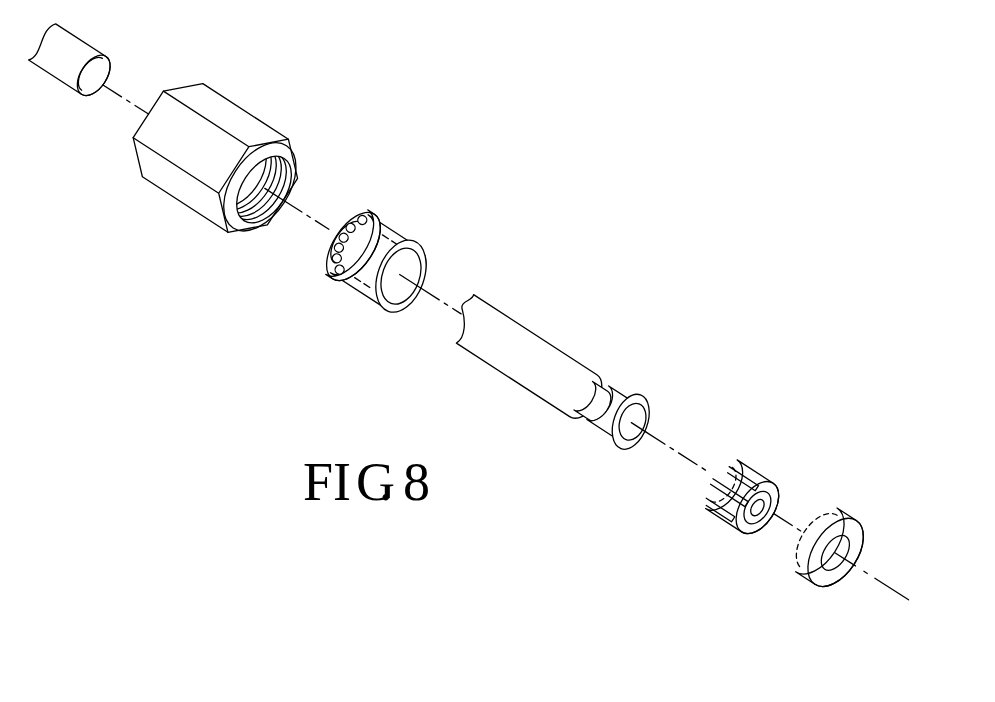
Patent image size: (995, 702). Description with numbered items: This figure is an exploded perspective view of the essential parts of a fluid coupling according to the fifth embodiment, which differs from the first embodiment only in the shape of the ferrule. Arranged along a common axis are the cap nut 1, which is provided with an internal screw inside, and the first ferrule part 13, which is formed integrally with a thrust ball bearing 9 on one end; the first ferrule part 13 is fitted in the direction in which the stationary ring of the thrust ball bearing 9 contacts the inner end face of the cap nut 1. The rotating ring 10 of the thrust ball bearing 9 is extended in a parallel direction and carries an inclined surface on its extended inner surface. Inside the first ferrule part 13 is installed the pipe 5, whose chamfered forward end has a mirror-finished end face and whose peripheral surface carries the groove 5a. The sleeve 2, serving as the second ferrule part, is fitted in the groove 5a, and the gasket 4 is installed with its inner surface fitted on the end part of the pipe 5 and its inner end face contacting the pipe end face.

The cap nut 1 is at (238, 106).
The sleeve 2 is at (703, 493).
The gasket 4 is at (832, 583).
The pipe 5 is at (520, 328).
The groove 5a is at (626, 398).
The thrust ball bearing 9 is at (330, 263).
The rotating ring 10 is at (348, 287).
The first ferrule part 13 is at (348, 239).